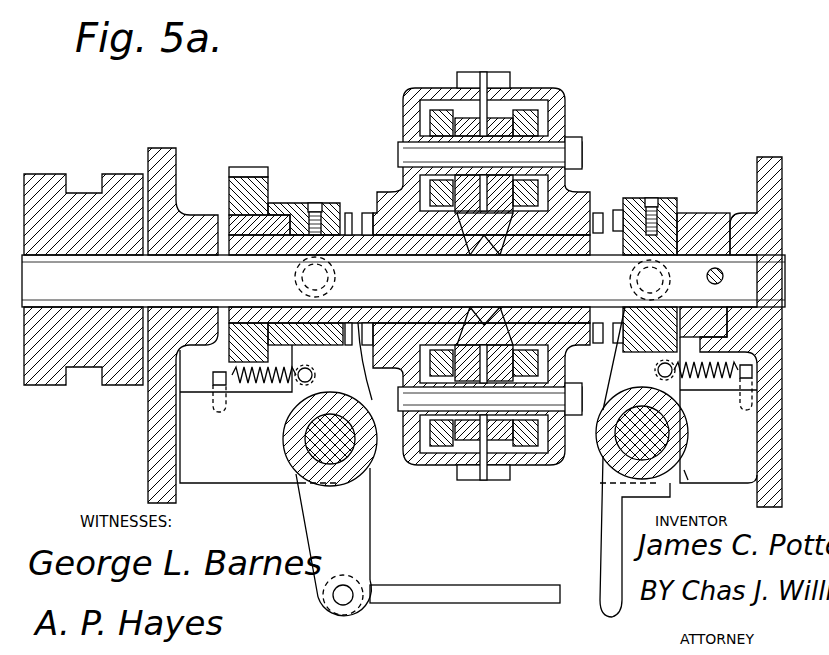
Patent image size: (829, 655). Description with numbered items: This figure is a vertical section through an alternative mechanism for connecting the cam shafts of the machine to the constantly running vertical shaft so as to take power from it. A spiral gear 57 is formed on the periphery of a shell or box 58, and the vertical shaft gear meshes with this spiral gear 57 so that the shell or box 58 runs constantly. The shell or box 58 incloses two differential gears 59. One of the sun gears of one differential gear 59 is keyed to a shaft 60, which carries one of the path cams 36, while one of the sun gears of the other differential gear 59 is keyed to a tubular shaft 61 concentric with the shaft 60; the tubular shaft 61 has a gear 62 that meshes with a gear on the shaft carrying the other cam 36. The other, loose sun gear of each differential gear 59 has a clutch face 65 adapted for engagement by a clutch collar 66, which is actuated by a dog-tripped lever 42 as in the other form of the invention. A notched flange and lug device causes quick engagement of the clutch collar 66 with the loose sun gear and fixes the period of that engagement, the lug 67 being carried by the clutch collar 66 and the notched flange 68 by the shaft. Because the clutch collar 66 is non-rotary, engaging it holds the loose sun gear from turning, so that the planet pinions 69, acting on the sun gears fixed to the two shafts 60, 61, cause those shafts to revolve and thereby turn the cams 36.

The path cam 36 is at (50, 192).
The lever 42 is at (310, 518).
The spiral gear 57 is at (487, 82).
The shell or box 58 is at (422, 95).
The differential gears 59 is at (468, 305).
The shaft 60 is at (403, 281).
The tubular shaft 61 is at (370, 238).
The gear 62 is at (241, 167).
The clutch face 65 is at (600, 215).
The clutch collar 66 is at (297, 203).
The lug 67 is at (282, 205).
The notched flange 68 is at (229, 215).
The planet pinions 69 is at (557, 133).